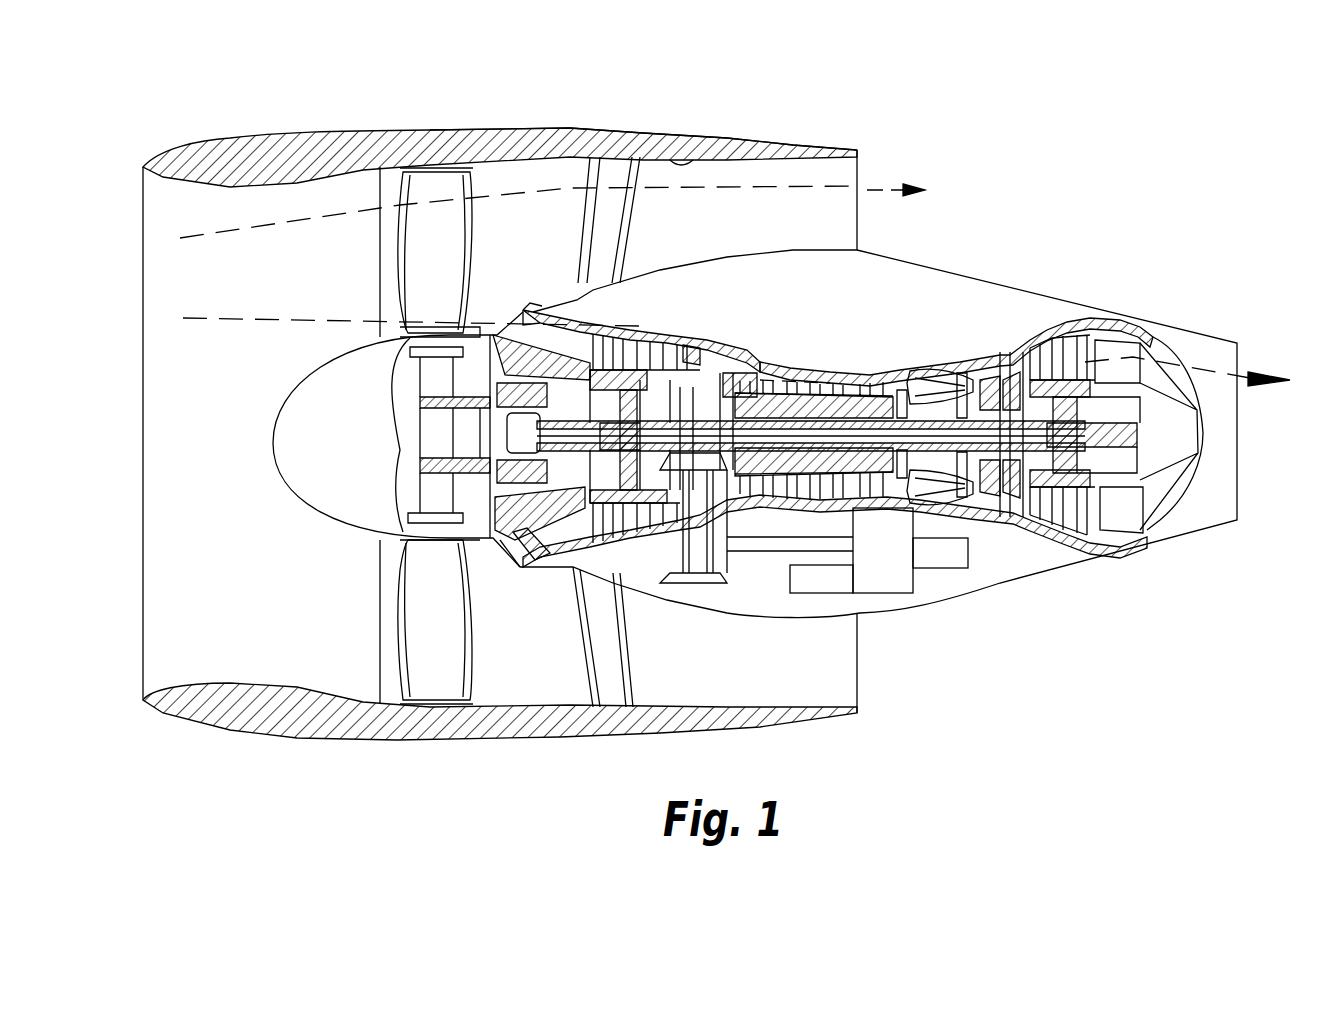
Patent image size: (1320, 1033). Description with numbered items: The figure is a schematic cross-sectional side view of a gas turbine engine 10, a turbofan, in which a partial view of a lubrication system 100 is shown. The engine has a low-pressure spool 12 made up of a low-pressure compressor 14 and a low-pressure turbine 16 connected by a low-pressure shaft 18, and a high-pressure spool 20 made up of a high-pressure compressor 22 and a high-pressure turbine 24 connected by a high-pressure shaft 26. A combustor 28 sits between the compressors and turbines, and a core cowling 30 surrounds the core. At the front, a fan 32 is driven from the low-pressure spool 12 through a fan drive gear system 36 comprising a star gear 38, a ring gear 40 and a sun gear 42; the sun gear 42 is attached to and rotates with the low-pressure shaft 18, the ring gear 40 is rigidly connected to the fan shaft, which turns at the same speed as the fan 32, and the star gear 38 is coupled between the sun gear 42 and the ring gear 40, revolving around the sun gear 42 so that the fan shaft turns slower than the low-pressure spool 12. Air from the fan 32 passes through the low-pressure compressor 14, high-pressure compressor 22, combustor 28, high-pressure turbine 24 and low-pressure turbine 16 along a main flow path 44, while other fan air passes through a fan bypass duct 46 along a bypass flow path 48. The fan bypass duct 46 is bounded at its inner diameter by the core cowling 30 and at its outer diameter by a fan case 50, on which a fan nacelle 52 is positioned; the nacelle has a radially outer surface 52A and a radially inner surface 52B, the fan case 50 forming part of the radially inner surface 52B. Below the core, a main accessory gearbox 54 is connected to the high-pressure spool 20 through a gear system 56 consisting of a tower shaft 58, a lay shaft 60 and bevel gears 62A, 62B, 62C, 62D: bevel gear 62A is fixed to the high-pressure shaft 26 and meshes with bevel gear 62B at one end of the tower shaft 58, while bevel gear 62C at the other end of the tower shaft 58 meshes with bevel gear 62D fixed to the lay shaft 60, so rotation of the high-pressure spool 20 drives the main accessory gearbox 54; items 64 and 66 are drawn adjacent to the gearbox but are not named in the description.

The gas turbine engine 10 is at (762, 112).
The low-pressure spool 12 is at (793, 367).
The low-pressure compressor 14 is at (642, 326).
The low-pressure turbine 16 is at (1070, 318).
The low-pressure shaft 18 is at (658, 430).
The high-pressure spool 20 is at (900, 373).
The high-pressure compressor 22 is at (850, 367).
The high-pressure turbine 24 is at (997, 342).
The high-pressure shaft 26 is at (967, 454).
The combustor 28 is at (938, 356).
The core cowling 30 is at (1197, 347).
The fan 32 is at (437, 188).
The fan drive gear system 36 is at (493, 434).
The star gear 38 is at (567, 400).
The ring gear 40 is at (507, 548).
The sun gear 42 is at (533, 476).
The main flow path 44 is at (233, 318).
The fan bypass duct 46 is at (845, 221).
The bypass flow path 48 is at (233, 230).
The fan case 50 is at (378, 170).
The fan nacelle 52 is at (357, 125).
The radially outer surface 52A is at (617, 133).
The radially inner surface 52B is at (672, 134).
The main accessory gearbox 54 is at (880, 590).
The gear system 56 is at (652, 578).
The tower shaft 58 is at (687, 543).
The lay shaft 60 is at (797, 540).
The bevel gear 62A is at (728, 341).
The bevel gear 62B is at (688, 336).
The bevel gear 62C is at (703, 583).
The bevel gear 62D is at (727, 565).
The generator 64 is at (820, 582).
The accessory 66 is at (937, 577).
The lubrication system 100 is at (965, 410).